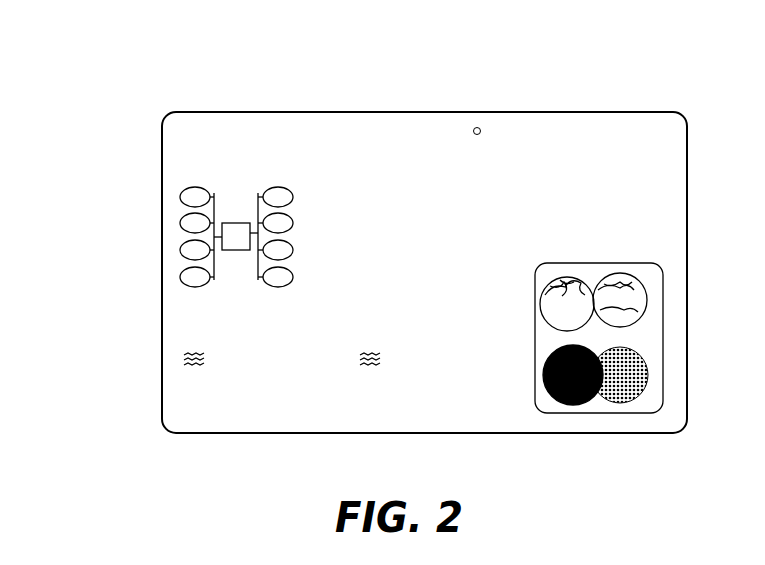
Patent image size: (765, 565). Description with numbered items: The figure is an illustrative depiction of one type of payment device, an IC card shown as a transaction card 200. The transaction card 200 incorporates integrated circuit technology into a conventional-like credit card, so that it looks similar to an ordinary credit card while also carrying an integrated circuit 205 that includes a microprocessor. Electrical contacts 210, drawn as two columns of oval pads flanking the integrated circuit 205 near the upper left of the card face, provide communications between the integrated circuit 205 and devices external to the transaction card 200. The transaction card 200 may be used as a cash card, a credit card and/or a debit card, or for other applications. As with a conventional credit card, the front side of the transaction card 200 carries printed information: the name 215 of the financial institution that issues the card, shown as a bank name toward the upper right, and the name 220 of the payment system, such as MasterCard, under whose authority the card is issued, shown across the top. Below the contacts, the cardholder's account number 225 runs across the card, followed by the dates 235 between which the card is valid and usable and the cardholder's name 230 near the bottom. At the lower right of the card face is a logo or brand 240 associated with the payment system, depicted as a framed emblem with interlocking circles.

The transaction card 200 is at (52, 35).
The integrated circuit 205 is at (222, 236).
The electrical contacts 210 is at (262, 193).
The name of a financial institution 215 is at (586, 210).
The name of a payment system 220 is at (275, 138).
The cardholder's account number 225 is at (178, 313).
The cardholder's name 230 is at (197, 397).
The dates 235 is at (183, 361).
The logo or brand 240 is at (627, 400).